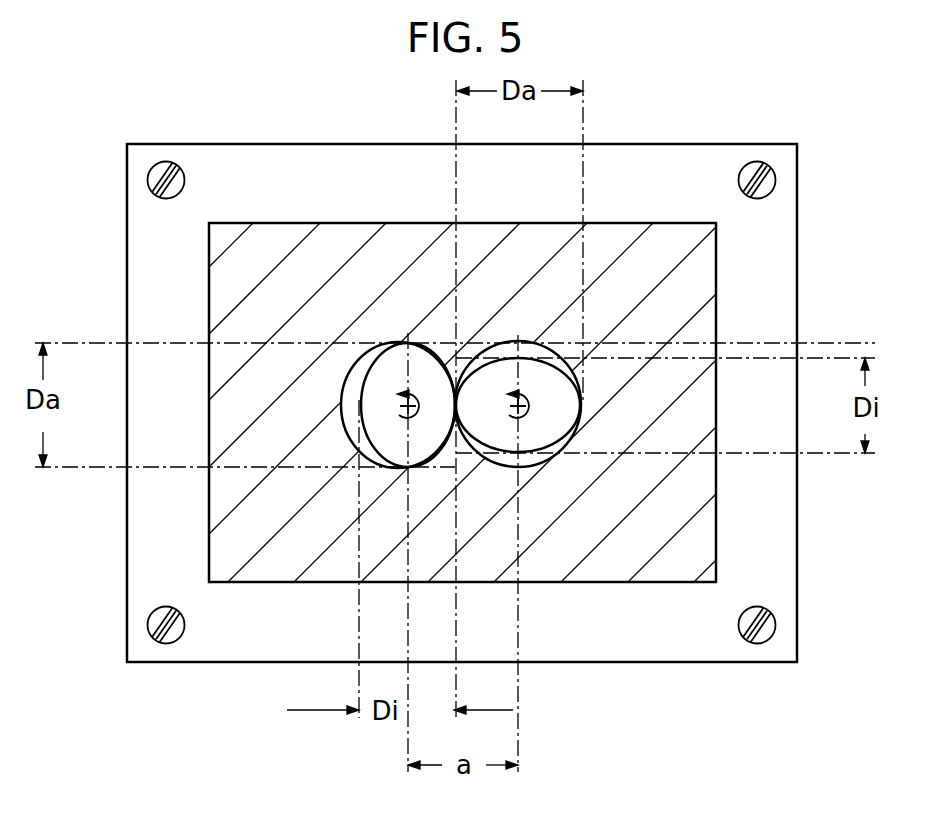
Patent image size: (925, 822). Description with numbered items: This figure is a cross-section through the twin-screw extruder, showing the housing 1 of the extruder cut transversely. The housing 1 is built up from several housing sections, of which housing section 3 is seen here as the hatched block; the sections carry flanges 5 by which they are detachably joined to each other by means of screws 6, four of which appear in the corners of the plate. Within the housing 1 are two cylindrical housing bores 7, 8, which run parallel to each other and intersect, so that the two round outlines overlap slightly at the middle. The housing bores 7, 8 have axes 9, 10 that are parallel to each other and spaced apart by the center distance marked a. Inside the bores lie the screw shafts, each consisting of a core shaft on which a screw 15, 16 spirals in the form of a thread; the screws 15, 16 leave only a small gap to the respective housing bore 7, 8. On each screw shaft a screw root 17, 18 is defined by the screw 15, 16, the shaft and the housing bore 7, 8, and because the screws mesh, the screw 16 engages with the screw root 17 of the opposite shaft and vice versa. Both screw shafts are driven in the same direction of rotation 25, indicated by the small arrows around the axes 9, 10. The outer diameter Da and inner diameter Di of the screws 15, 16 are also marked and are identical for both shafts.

The housing 1 is at (609, 145).
The housing section 3 is at (310, 262).
The flange 5 is at (775, 229).
The screw 6 is at (755, 161).
The housing bore 7 is at (358, 357).
The housing bore 8 is at (573, 355).
The axis 9 is at (407, 407).
The axis 10 is at (520, 408).
The screw 15 is at (398, 368).
The screw 16 is at (540, 352).
The screw root 17 is at (353, 361).
The screw root 18 is at (532, 373).
The direction of rotation 25 is at (420, 370).